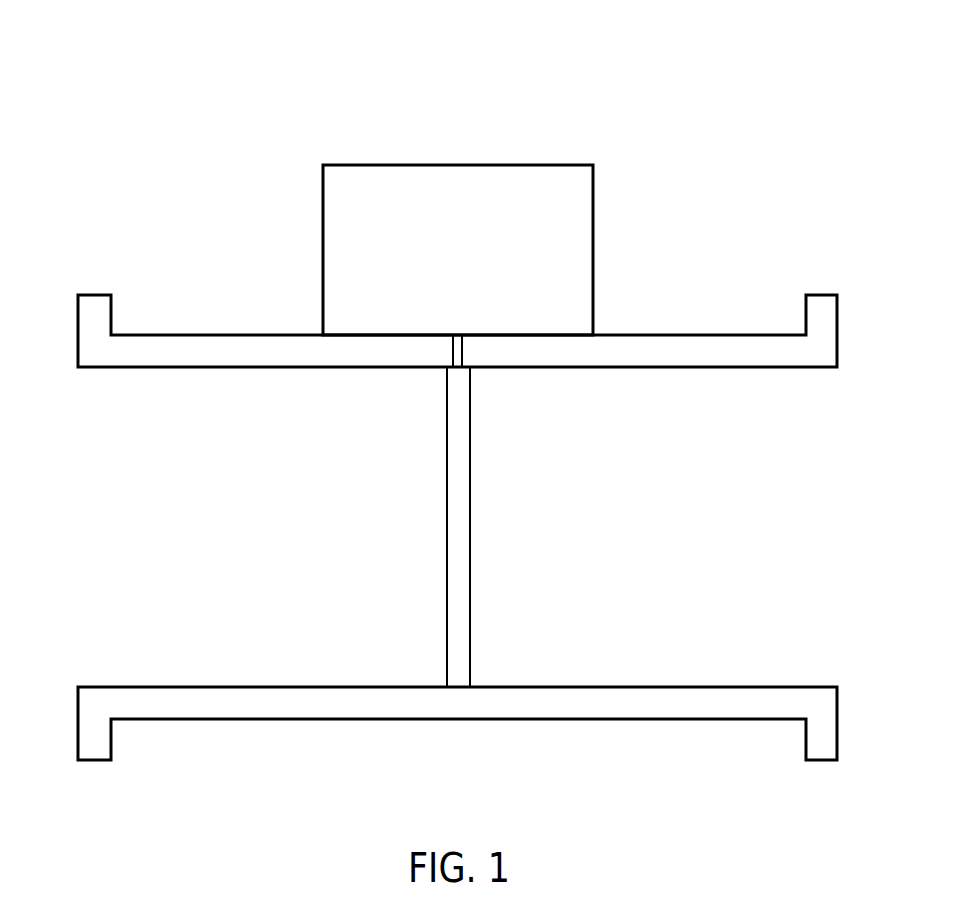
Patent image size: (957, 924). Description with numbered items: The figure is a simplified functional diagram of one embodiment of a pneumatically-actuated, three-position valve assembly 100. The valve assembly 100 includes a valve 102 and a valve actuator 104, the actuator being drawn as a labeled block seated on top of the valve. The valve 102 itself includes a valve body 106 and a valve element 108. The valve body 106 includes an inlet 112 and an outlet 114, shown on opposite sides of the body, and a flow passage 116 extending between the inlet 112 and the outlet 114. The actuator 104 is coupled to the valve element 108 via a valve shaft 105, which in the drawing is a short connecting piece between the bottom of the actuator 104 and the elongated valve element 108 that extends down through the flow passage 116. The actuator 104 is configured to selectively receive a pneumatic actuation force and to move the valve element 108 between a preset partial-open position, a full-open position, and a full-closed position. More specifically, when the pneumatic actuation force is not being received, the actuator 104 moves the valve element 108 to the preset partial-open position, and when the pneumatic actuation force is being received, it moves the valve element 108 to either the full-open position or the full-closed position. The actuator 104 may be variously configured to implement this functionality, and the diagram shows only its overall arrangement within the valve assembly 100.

The valve assembly 100 is at (187, 120).
The valve 102 is at (187, 300).
The valve actuator 104 is at (593, 207).
The valve shaft 105 is at (462, 352).
The valve body 106 is at (693, 335).
The valve element 108 is at (470, 515).
The inlet 112 is at (820, 500).
The outlet 114 is at (102, 497).
The flow passage 116 is at (665, 612).